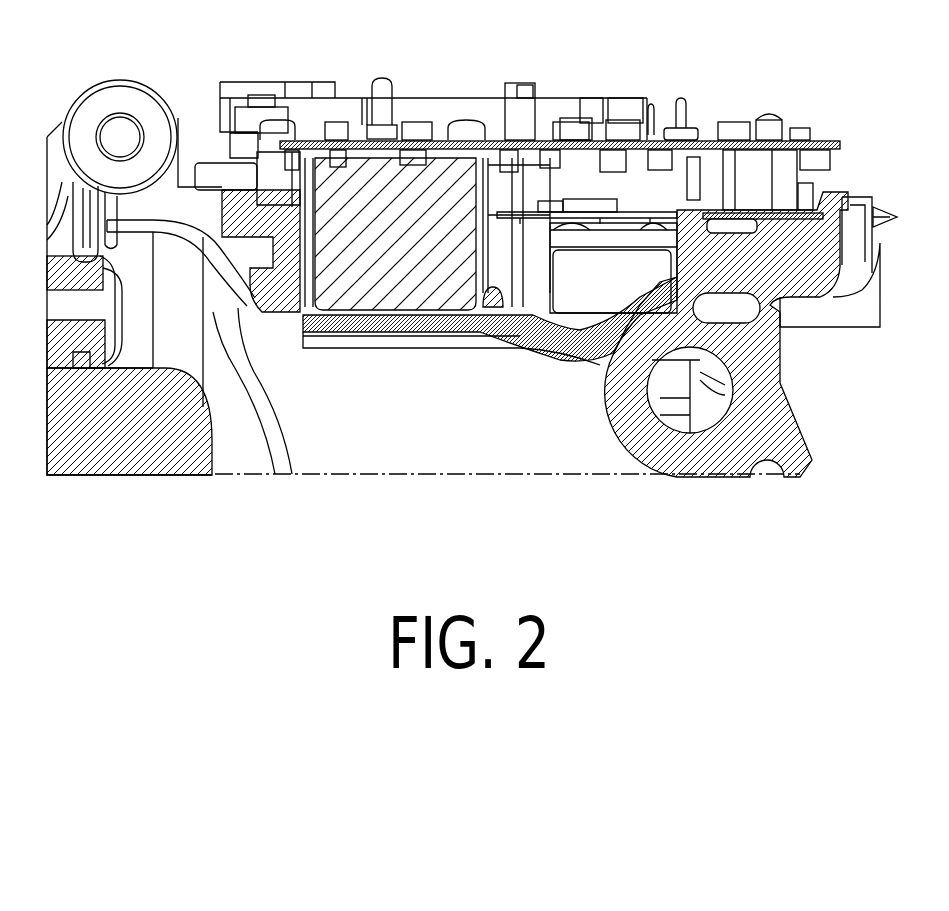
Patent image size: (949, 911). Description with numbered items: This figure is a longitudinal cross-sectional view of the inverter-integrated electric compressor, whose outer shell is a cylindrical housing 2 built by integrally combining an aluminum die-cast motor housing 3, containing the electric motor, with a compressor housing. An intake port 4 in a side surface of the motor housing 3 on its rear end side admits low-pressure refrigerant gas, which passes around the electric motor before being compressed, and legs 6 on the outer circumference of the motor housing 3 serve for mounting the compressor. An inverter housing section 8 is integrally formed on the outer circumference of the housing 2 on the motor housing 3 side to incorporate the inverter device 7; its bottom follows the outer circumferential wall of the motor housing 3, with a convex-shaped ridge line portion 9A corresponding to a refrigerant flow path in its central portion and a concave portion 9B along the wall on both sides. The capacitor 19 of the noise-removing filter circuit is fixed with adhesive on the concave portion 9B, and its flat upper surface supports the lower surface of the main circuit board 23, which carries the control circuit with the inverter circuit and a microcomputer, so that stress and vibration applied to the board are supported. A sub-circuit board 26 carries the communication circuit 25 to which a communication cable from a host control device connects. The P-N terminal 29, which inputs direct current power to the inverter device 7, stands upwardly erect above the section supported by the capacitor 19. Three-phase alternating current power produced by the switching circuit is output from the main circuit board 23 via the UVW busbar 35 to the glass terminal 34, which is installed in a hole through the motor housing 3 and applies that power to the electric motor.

The housing 2 is at (177, 480).
The motor housing 3 is at (486, 450).
The intake port 4 is at (678, 424).
The legs 6 is at (117, 105).
The inverter device 7 is at (690, 112).
The inverter housing section 8 is at (843, 235).
The convex-shaped ridge line portion 9A is at (594, 235).
The concave portion 9B is at (398, 306).
The capacitor 19 is at (408, 190).
The main circuit board 23 is at (563, 140).
The communication circuit 25 is at (565, 196).
The sub-circuit board 26 is at (632, 212).
The P-N terminal 29 is at (380, 78).
The glass terminal 34 is at (228, 176).
The UVW busbar 35 is at (320, 110).